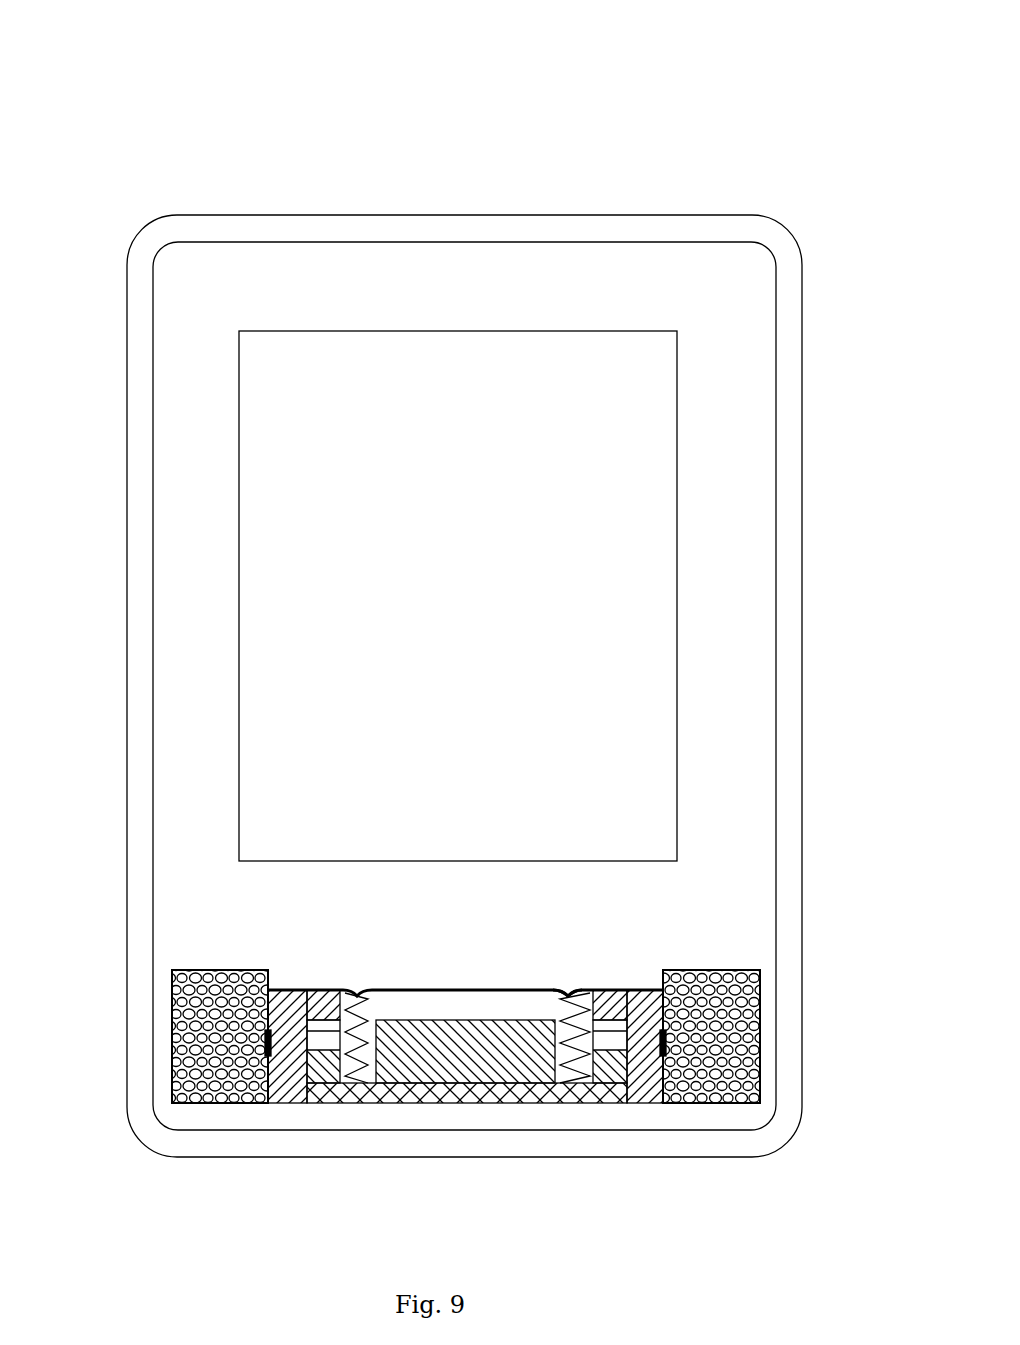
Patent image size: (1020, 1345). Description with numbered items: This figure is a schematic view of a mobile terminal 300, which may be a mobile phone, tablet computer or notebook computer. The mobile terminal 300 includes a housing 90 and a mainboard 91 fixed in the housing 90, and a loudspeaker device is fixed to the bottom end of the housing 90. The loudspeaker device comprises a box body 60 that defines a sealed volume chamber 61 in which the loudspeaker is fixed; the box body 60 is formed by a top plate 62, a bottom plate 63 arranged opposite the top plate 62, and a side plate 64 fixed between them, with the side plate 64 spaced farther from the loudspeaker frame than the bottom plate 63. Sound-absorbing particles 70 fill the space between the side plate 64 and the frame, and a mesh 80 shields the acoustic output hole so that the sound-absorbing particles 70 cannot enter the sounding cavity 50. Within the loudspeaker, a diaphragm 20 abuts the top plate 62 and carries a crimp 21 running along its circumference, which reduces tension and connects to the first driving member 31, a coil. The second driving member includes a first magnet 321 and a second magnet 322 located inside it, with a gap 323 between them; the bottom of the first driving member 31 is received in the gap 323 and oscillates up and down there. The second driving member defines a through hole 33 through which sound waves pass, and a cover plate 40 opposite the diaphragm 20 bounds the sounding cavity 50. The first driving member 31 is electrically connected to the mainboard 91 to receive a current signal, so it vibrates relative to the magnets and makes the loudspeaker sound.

The mobile terminal 300 is at (553, 66).
The housing 90 is at (140, 623).
The mainboard 91 is at (238, 754).
The box body 60 is at (150, 1043).
The top plate 62 is at (172, 1018).
The side plate 64 is at (172, 1060).
The bottom plate 63 is at (176, 1088).
The sealed volume chamber 61 is at (755, 1050).
The mesh 80 is at (255, 1090).
The sound-absorbing particles 70 is at (712, 1080).
The diaphragm 20 is at (472, 988).
The crimp 21 is at (573, 987).
The sounding cavity 50 is at (604, 988).
The through hole 33 is at (322, 1045).
The first driving member 31 is at (465, 1109).
The first magnet 321 is at (327, 1100).
The second magnet 322 is at (455, 1055).
The gap 323 is at (390, 1060).
The cover plate 40 is at (478, 1128).